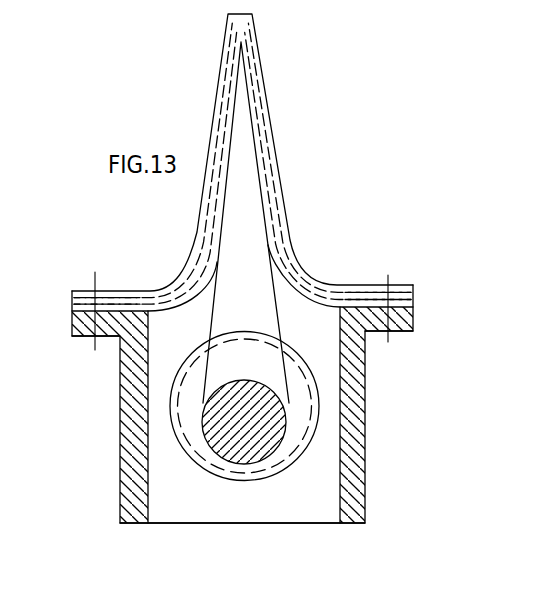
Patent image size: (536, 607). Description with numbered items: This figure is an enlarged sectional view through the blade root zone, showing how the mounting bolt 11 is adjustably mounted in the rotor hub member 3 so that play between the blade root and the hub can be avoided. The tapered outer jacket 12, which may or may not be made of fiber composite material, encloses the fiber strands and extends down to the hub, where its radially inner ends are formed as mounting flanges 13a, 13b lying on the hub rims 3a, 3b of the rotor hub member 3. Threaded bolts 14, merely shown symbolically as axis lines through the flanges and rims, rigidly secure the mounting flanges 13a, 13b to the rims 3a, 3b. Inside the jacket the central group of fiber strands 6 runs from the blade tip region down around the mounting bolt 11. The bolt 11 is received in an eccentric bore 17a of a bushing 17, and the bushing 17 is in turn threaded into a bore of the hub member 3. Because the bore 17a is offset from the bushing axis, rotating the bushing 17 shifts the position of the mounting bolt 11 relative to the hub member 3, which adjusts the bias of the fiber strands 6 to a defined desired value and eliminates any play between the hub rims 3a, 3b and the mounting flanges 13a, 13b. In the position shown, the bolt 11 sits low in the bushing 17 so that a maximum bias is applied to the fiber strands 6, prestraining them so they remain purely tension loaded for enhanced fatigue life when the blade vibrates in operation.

The rotor hub member 3 is at (357, 472).
The hub rim 3a is at (408, 333).
The hub rim 3b is at (89, 329).
The central group of fiber strands 6 is at (270, 239).
The mounting bolt 11 is at (274, 448).
The outer jacket 12 is at (218, 129).
The mounting flange 13a is at (349, 291).
The mounting flange 13b is at (153, 291).
The threaded bolt 14 is at (239, 303).
The bushing 17 is at (296, 374).
The eccentric bore 17a is at (203, 450).